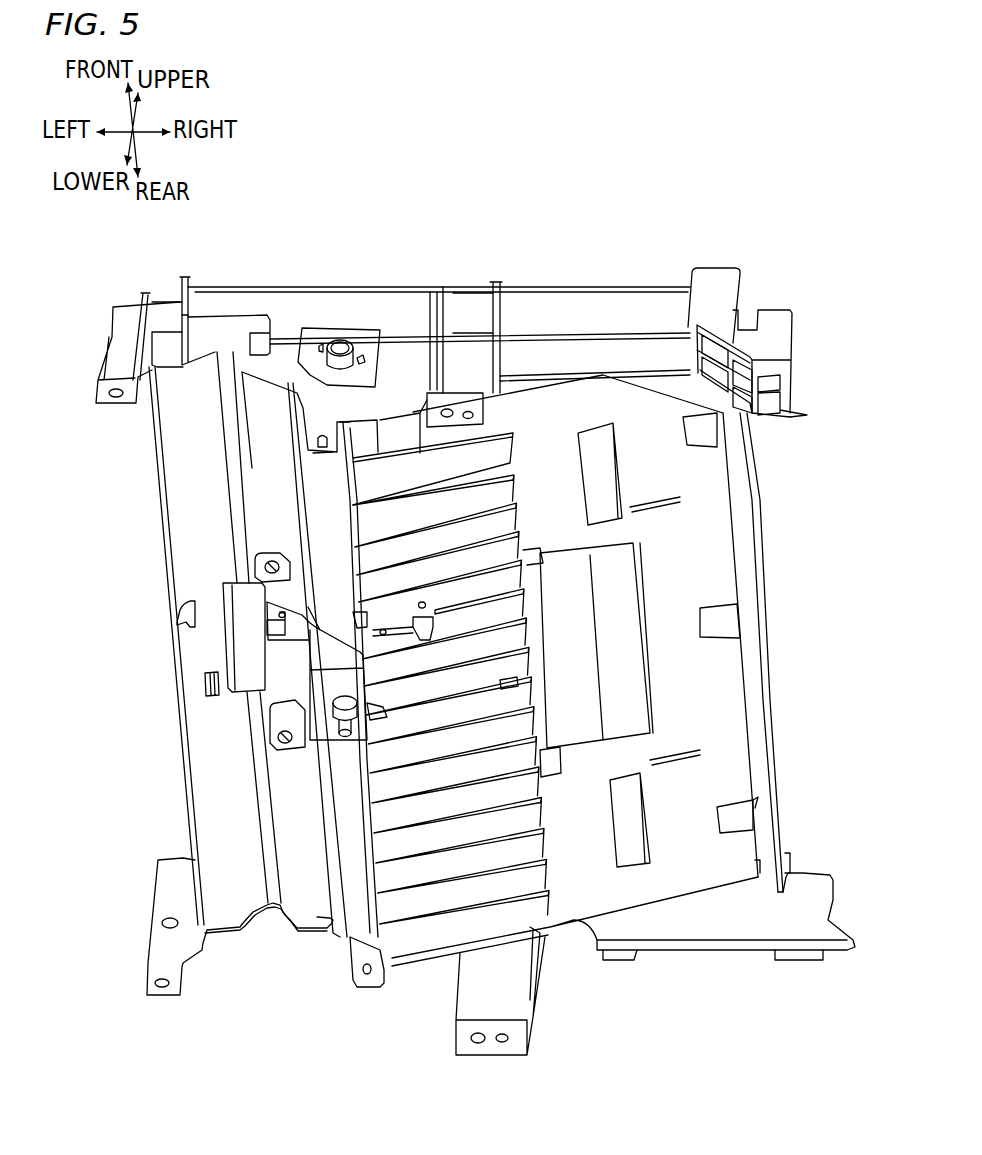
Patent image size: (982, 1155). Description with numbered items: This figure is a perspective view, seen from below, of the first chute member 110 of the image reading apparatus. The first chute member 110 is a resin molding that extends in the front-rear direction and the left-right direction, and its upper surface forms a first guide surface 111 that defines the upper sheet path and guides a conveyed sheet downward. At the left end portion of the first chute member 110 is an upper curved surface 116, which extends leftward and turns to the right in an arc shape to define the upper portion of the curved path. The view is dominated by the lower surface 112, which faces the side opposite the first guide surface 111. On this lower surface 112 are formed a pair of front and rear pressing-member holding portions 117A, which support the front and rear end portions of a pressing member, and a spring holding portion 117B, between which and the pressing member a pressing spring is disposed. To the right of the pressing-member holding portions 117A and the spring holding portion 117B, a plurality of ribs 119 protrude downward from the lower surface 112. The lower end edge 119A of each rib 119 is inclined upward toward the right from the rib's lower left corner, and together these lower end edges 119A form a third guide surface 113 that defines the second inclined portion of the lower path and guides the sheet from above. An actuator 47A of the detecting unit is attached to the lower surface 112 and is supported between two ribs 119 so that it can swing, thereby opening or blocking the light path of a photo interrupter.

The first chute member 110 is at (609, 269).
The first guide surface 111 is at (673, 560).
The lower surface 112 is at (467, 695).
The third guide surface 113 is at (450, 553).
The upper curved surface 116 is at (193, 515).
The pressing-member holding portions 117A is at (320, 442).
The spring holding portion 117B is at (345, 655).
The ribs 119 is at (528, 645).
The lower end edge 119A is at (453, 520).
The actuator 47A is at (425, 642).